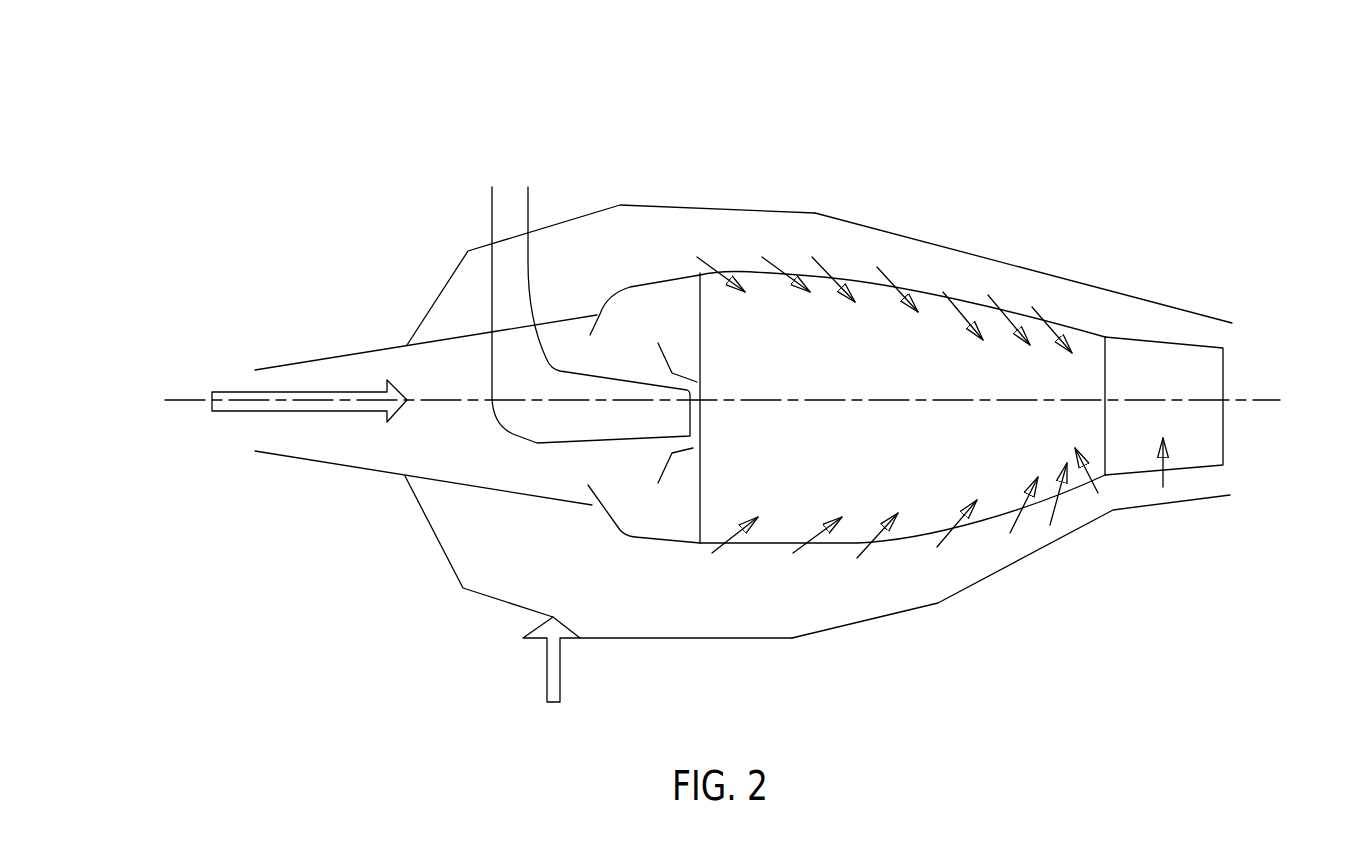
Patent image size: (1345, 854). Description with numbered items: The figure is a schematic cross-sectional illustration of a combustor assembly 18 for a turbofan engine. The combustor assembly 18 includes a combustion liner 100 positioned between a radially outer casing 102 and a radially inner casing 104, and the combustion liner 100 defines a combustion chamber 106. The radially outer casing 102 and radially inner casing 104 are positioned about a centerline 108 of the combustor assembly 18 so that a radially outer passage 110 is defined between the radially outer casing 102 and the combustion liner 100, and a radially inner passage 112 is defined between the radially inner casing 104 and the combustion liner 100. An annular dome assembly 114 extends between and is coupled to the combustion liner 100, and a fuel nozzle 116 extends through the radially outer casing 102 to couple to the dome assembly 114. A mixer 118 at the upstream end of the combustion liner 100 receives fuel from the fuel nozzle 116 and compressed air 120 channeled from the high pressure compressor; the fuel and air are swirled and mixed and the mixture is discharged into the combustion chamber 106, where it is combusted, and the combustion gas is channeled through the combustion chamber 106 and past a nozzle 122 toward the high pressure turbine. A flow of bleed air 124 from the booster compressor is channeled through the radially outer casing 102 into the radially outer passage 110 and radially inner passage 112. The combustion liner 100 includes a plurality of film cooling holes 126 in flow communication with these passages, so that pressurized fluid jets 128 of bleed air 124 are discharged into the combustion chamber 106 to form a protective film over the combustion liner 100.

The combustor assembly 18 is at (437, 142).
The combustion liner 100 is at (863, 280).
The radially outer casing 102 is at (1039, 272).
The radially inner casing 104 is at (938, 605).
The combustion chamber 106 is at (917, 376).
The centerline 108 is at (1263, 400).
The radially outer passage 110 is at (670, 252).
The radially inner passage 112 is at (673, 606).
The dome assembly 114 is at (607, 300).
The fuel nozzle 116 is at (528, 193).
The mixer 118 is at (707, 380).
The compressed air 120 is at (228, 391).
The nozzle 122 is at (1177, 343).
The bleed air 124 is at (545, 693).
The film cooling holes 126 is at (715, 253).
The pressurized fluid jets 128 is at (732, 272).